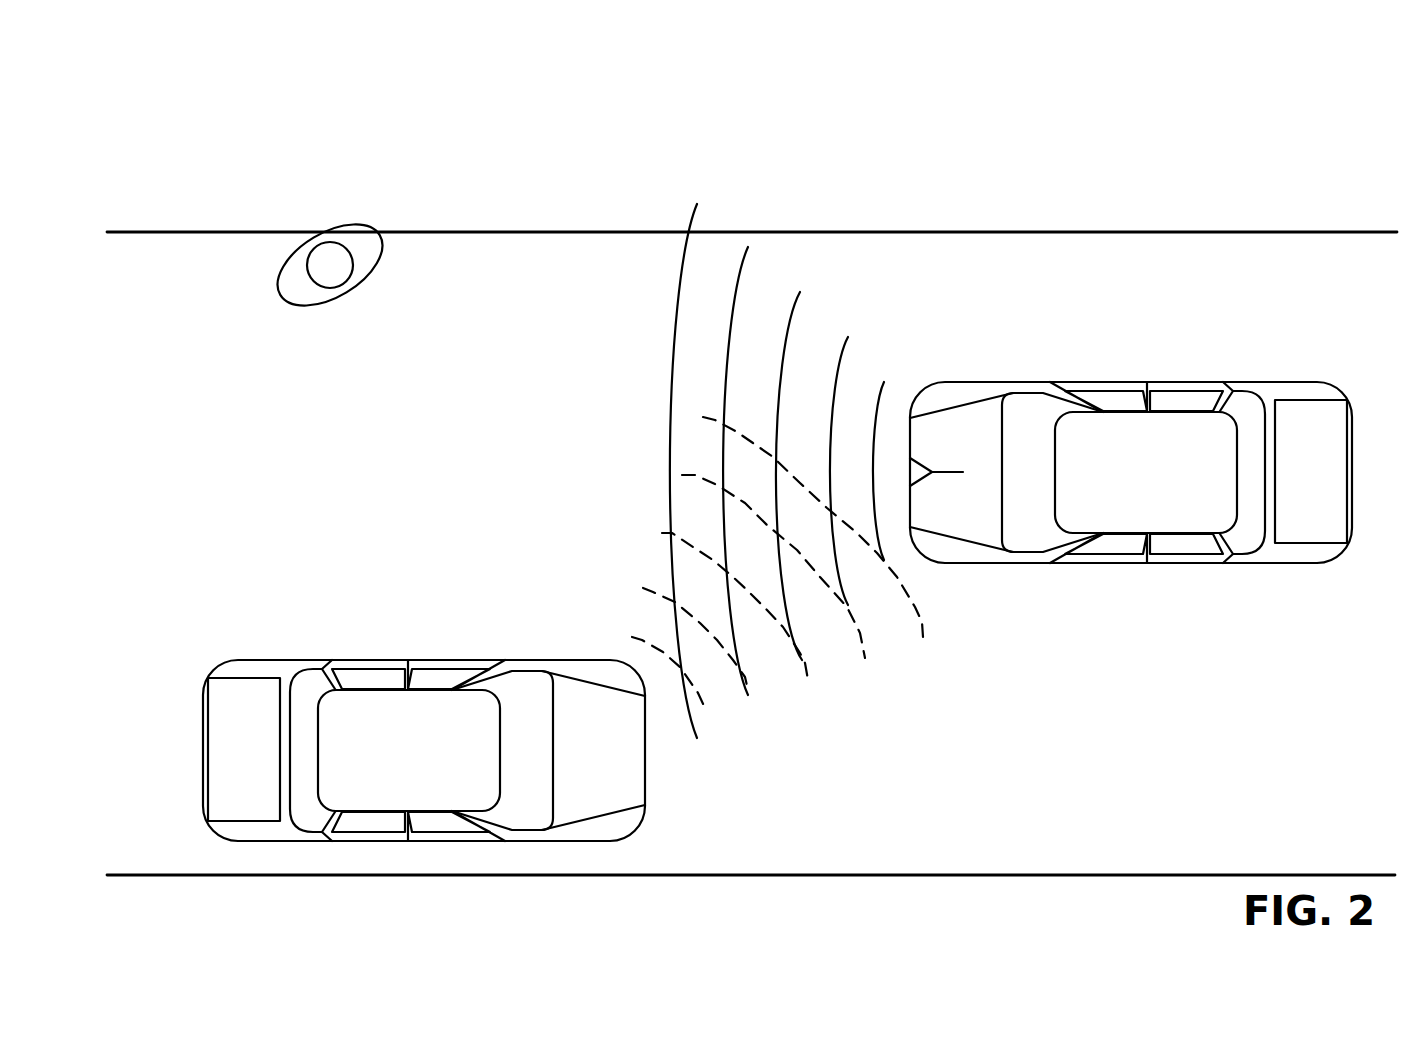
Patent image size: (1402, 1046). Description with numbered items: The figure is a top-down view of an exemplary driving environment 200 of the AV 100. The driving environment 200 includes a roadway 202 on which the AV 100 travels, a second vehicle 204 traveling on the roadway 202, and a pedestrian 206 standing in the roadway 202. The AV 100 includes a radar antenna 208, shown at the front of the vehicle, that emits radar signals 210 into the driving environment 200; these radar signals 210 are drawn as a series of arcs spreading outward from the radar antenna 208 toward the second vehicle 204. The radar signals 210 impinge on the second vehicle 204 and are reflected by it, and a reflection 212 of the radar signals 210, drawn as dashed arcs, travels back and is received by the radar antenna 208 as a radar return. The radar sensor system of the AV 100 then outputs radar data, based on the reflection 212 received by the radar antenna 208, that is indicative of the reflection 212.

The AV 100 is at (1298, 382).
The driving environment 200 is at (160, 107).
The roadway 202 is at (1183, 232).
The second vehicle 204 is at (645, 758).
The pedestrian 206 is at (317, 240).
The radar antenna 208 is at (912, 465).
The radar signals 210 is at (673, 347).
The reflection 212 is at (915, 610).